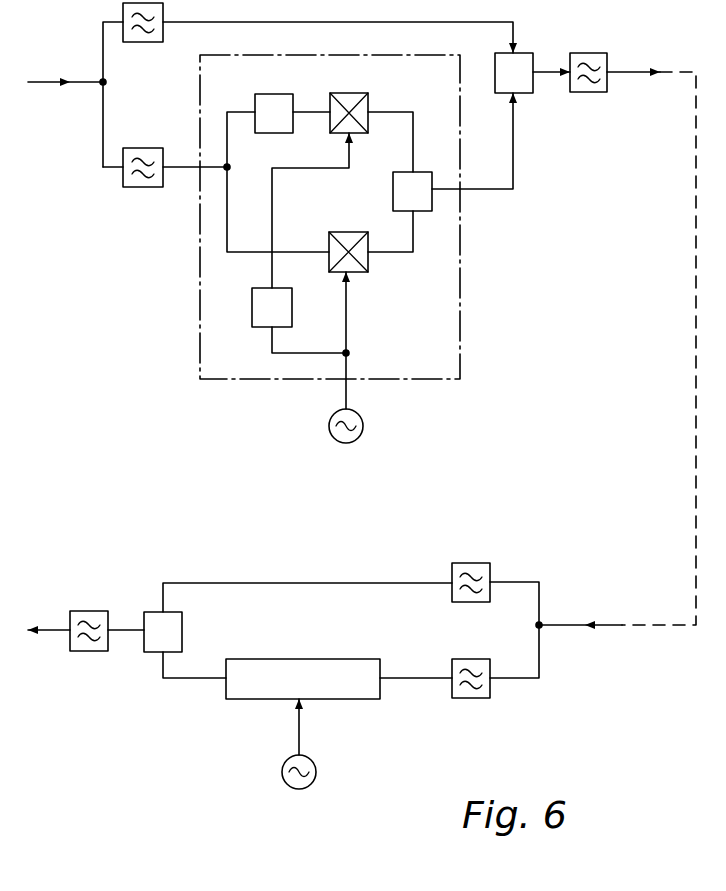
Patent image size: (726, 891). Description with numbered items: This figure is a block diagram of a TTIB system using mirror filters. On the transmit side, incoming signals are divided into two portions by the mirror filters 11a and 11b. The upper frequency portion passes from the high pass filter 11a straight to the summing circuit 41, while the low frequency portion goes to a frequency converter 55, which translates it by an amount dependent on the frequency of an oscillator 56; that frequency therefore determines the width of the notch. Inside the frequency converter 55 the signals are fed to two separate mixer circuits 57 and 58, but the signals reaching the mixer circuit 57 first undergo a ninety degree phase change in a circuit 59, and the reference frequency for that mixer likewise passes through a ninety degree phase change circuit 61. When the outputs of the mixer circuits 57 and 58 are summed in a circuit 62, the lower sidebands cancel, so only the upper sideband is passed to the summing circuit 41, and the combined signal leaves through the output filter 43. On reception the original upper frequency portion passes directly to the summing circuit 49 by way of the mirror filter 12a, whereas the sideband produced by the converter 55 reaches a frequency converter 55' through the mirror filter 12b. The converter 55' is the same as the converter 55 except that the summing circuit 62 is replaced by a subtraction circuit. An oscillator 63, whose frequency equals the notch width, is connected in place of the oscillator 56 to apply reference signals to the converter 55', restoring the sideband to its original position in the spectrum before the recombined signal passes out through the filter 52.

The mirror filter 11a is at (146, 43).
The mirror filter 11b is at (144, 148).
The summing circuit 41 is at (525, 53).
The band-pass filter 43 is at (597, 53).
The frequency converter 55 is at (299, 217).
The oscillator 56 is at (363, 420).
The mixer circuit 57 is at (345, 93).
The mixer circuit 58 is at (347, 232).
The 90° phase change circuit 59 is at (271, 94).
The 90° phase change circuit 61 is at (252, 296).
The summing circuit 62 is at (393, 180).
The mirror filter 12a is at (472, 563).
The mirror filter 12b is at (475, 659).
The summing circuit 49 is at (182, 628).
The band-pass filter 52 is at (88, 611).
The frequency converter 55' is at (303, 657).
The oscillator 63 is at (314, 760).